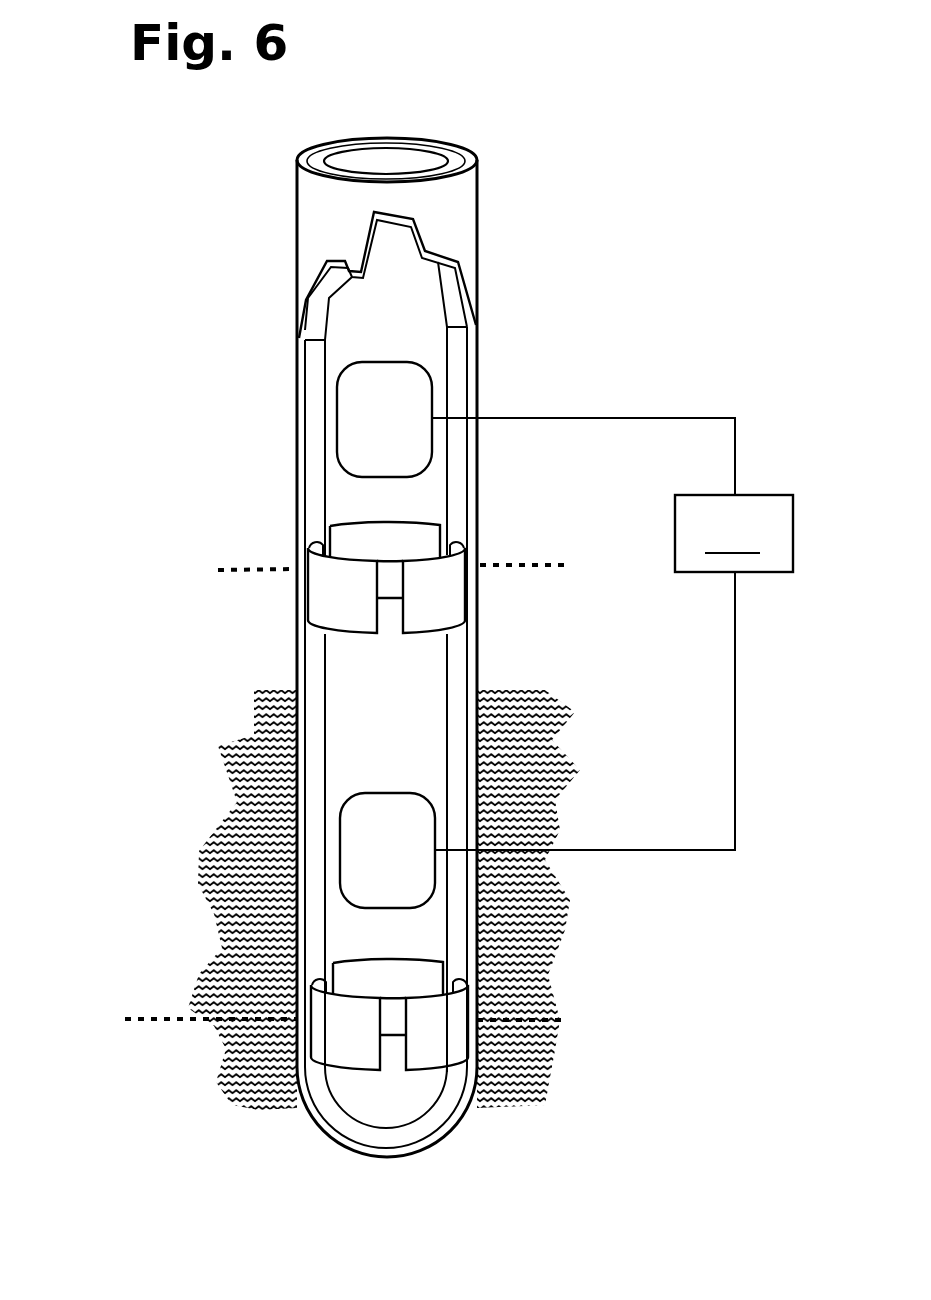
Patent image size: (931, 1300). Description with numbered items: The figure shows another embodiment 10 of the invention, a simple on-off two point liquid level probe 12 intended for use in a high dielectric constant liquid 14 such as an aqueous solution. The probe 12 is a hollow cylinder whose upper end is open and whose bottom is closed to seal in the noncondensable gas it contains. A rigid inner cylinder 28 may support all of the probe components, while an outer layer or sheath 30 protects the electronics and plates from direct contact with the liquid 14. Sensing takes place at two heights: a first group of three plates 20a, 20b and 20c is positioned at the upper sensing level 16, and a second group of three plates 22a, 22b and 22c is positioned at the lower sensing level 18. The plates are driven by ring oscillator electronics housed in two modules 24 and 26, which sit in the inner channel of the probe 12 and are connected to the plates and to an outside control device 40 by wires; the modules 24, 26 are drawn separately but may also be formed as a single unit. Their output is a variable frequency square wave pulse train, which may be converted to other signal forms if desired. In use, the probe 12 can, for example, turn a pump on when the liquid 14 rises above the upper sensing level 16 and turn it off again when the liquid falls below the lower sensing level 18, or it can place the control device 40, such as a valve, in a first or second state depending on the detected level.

The embodiment 10 is at (250, 158).
The two point liquid level probe 12 is at (458, 152).
The high dielectric constant liquid 14 is at (226, 752).
The upper sensing level 16 is at (218, 570).
The lower sensing level 18 is at (164, 1026).
The plate 20a is at (315, 612).
The plate 20b is at (430, 528).
The plate 20c is at (455, 607).
The plate 22a is at (335, 1047).
The plate 22b is at (367, 982).
The plate 22c is at (470, 1062).
The module 24 is at (362, 432).
The module 26 is at (365, 853).
The rigid inner cylinder 28 is at (315, 366).
The outer layer or sheath 30 is at (305, 413).
The control device 40 is at (612, 634).